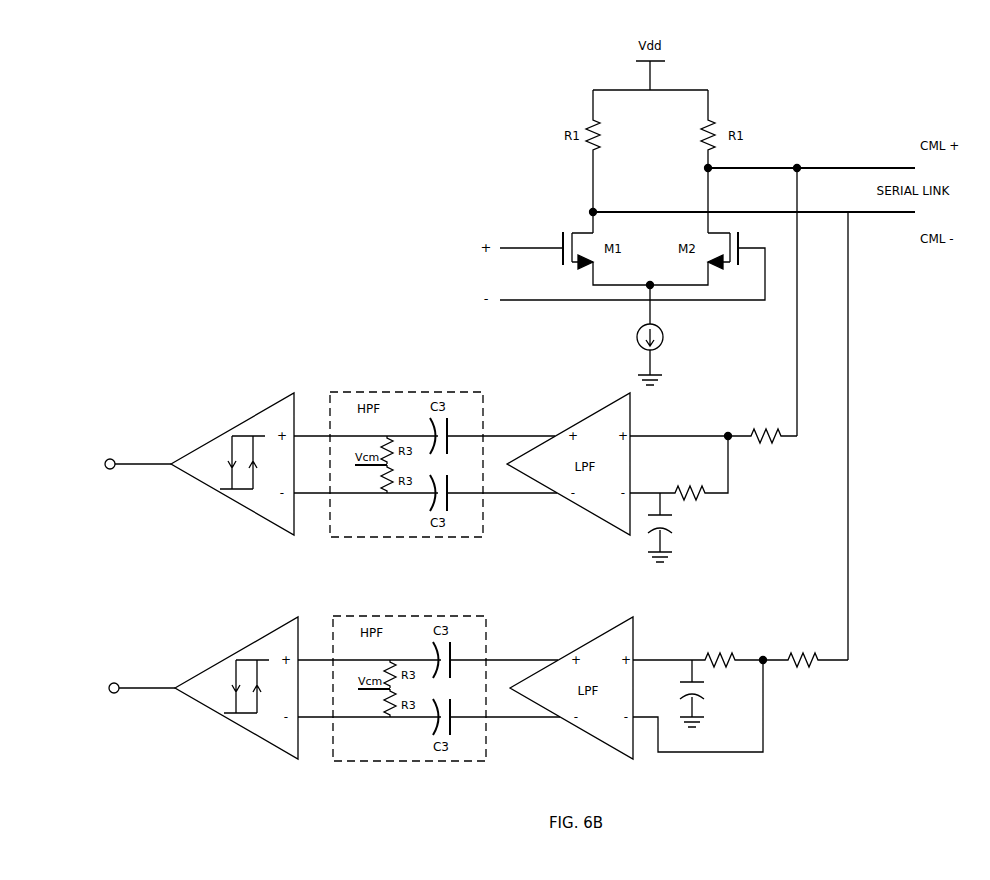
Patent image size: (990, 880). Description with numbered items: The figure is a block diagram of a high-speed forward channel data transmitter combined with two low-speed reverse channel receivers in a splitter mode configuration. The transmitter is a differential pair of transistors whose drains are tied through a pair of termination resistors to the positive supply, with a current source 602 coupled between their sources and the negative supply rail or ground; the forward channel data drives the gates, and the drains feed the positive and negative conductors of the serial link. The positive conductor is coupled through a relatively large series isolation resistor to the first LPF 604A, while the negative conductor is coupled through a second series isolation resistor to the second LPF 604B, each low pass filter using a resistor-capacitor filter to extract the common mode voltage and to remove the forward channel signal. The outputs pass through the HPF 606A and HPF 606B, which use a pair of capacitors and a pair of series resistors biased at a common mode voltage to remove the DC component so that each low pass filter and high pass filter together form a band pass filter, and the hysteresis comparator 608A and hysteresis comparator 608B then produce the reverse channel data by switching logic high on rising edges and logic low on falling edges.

The current source 602 is at (663, 337).
The first LPF 604A is at (600, 410).
The second LPF 604B is at (603, 634).
The HPF 606A is at (417, 392).
The HPF 606B is at (420, 616).
The hysteresis comparator 608A is at (275, 403).
The hysteresis comparator 608B is at (279, 627).